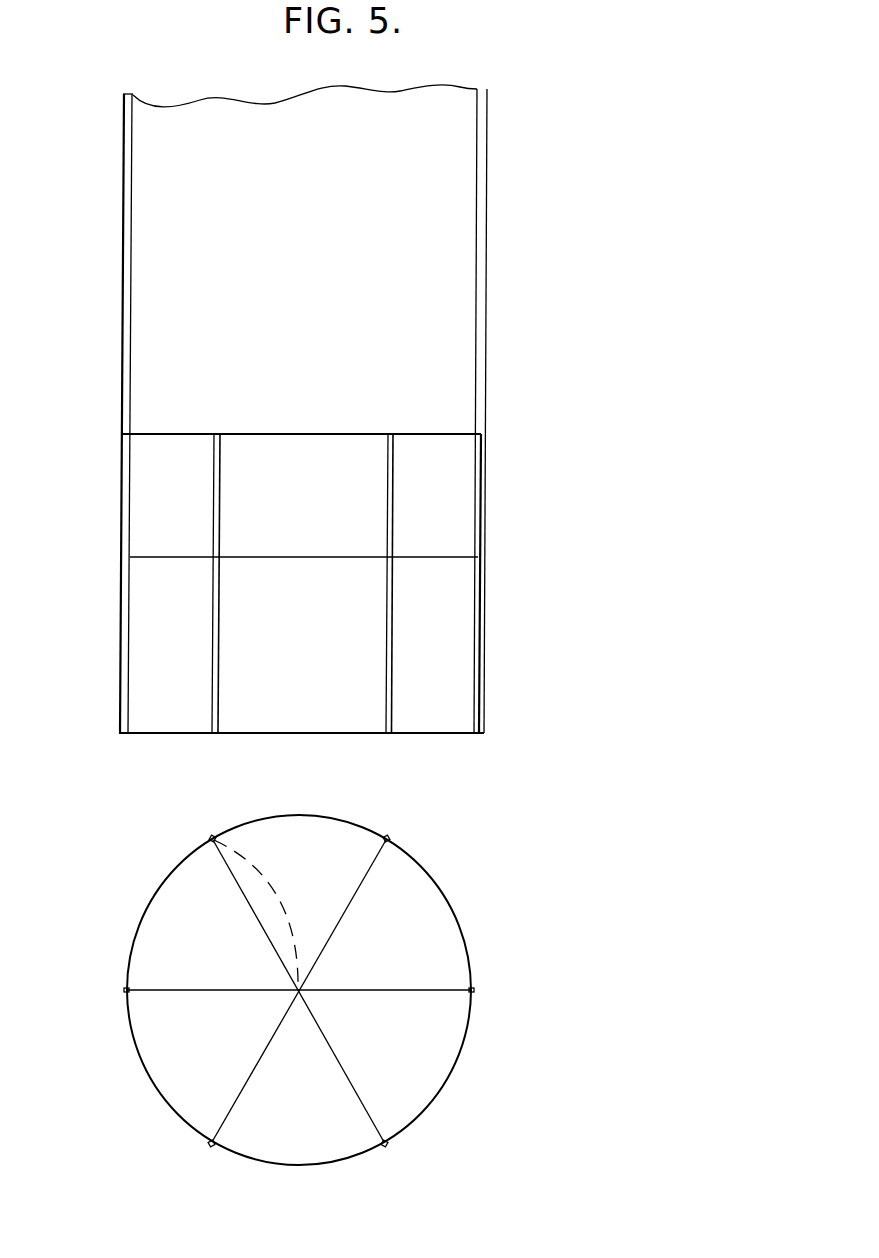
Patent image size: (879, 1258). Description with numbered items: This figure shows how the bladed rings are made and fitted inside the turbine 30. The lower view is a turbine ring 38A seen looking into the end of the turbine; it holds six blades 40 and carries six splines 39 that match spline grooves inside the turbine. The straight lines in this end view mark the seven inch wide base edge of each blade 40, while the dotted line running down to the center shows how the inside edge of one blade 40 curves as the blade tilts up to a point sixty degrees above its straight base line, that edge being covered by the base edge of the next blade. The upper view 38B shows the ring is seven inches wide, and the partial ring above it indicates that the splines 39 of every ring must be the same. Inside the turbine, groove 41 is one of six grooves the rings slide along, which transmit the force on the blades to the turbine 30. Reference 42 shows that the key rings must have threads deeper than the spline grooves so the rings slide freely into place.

The turbine 30 is at (489, 280).
The turbine ring 38A is at (446, 1095).
The turbine ring side view 38B is at (338, 608).
The spline 39 is at (119, 513).
The turbine ring blade 40 is at (320, 893).
The groove 41 is at (478, 89).
The key ring threads 42 is at (489, 90).